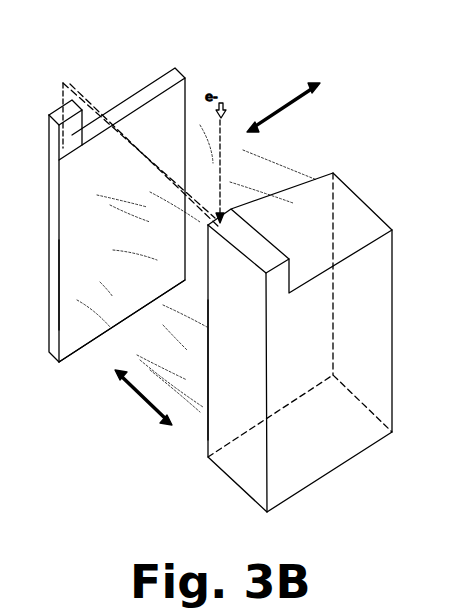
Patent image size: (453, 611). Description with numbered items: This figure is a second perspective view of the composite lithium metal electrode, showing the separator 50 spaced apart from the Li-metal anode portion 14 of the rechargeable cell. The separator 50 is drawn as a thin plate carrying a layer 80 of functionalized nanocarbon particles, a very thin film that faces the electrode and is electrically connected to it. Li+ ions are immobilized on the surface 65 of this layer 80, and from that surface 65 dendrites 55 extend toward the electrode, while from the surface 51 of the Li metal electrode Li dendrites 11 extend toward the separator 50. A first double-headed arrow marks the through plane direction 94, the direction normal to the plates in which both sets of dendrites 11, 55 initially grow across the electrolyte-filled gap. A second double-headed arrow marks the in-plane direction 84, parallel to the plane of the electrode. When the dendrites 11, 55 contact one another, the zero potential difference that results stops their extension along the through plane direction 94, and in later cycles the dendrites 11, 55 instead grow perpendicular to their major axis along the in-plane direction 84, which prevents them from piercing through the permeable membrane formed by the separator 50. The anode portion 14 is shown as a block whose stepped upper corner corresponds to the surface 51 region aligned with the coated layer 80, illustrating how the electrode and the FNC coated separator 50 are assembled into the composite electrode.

The separator 50 is at (110, 68).
The layer of functionalized nanocarbon particles 80 is at (58, 238).
The surface of the FNC layer 65 is at (75, 288).
The dendrites 55 is at (92, 320).
The through plane direction 94 is at (133, 400).
The in-plane direction 84 is at (268, 118).
The surface of the Li metal electrode 51 is at (352, 200).
The Li-metal anode portion 14 is at (317, 485).
The Li dendrites 11 is at (190, 395).